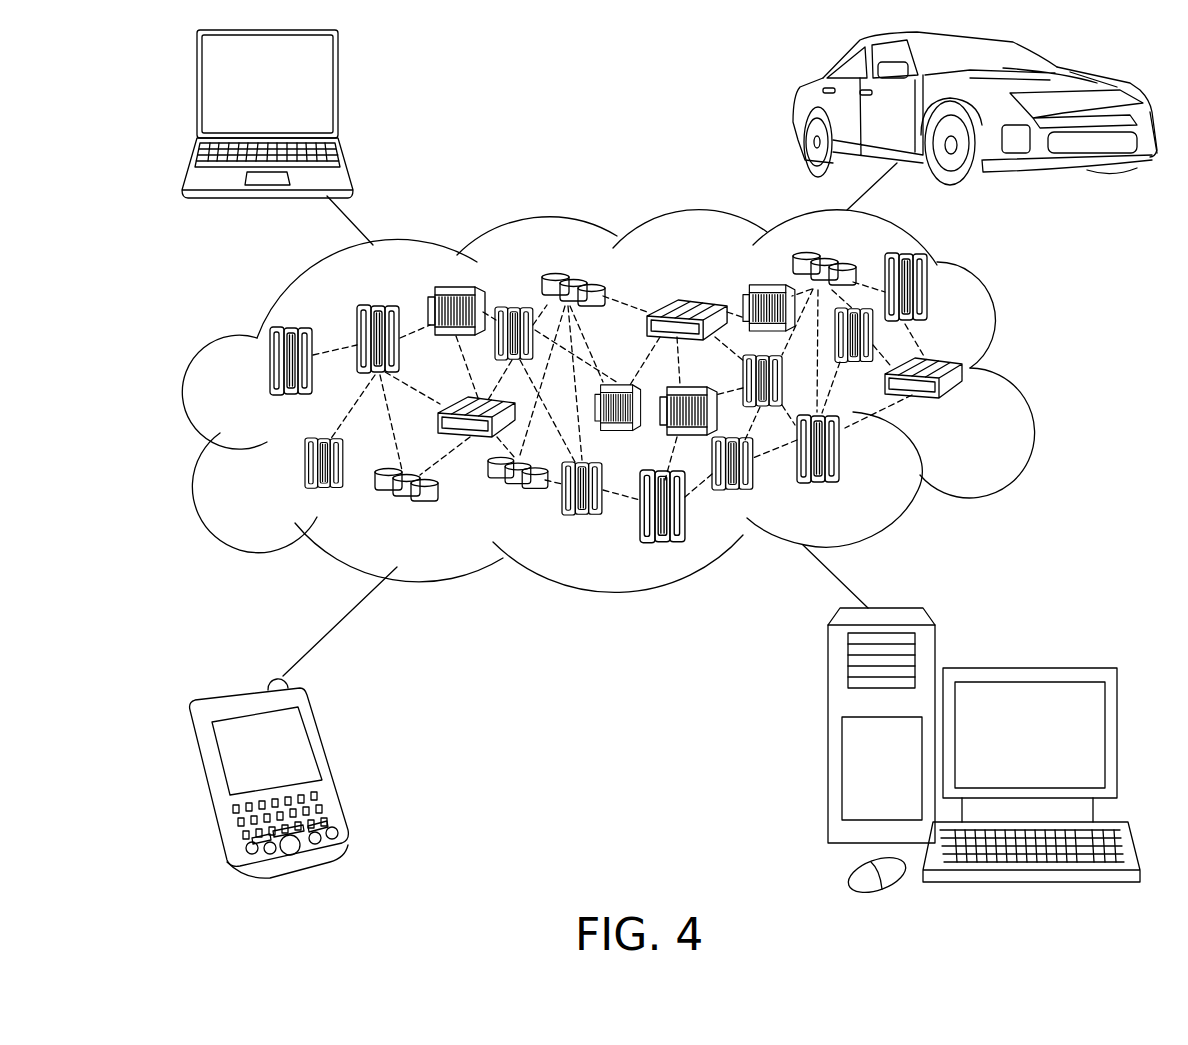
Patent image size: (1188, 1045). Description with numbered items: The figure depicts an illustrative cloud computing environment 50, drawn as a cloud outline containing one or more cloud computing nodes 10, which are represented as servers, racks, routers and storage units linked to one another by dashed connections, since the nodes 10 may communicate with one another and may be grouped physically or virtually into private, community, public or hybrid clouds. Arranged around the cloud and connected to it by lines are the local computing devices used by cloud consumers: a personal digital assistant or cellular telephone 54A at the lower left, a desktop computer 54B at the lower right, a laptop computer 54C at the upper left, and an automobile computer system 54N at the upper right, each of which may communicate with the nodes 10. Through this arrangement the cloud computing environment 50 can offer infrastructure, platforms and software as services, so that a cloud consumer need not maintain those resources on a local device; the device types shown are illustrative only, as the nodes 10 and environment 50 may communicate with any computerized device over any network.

The cloud computing node 10 is at (968, 405).
The cloud computing environment 50 is at (639, 401).
The personal digital assistant or cellular telephone 54A is at (333, 763).
The desktop computer 54B is at (1028, 667).
The laptop computer 54C is at (343, 95).
The automobile computer system 54N is at (800, 112).